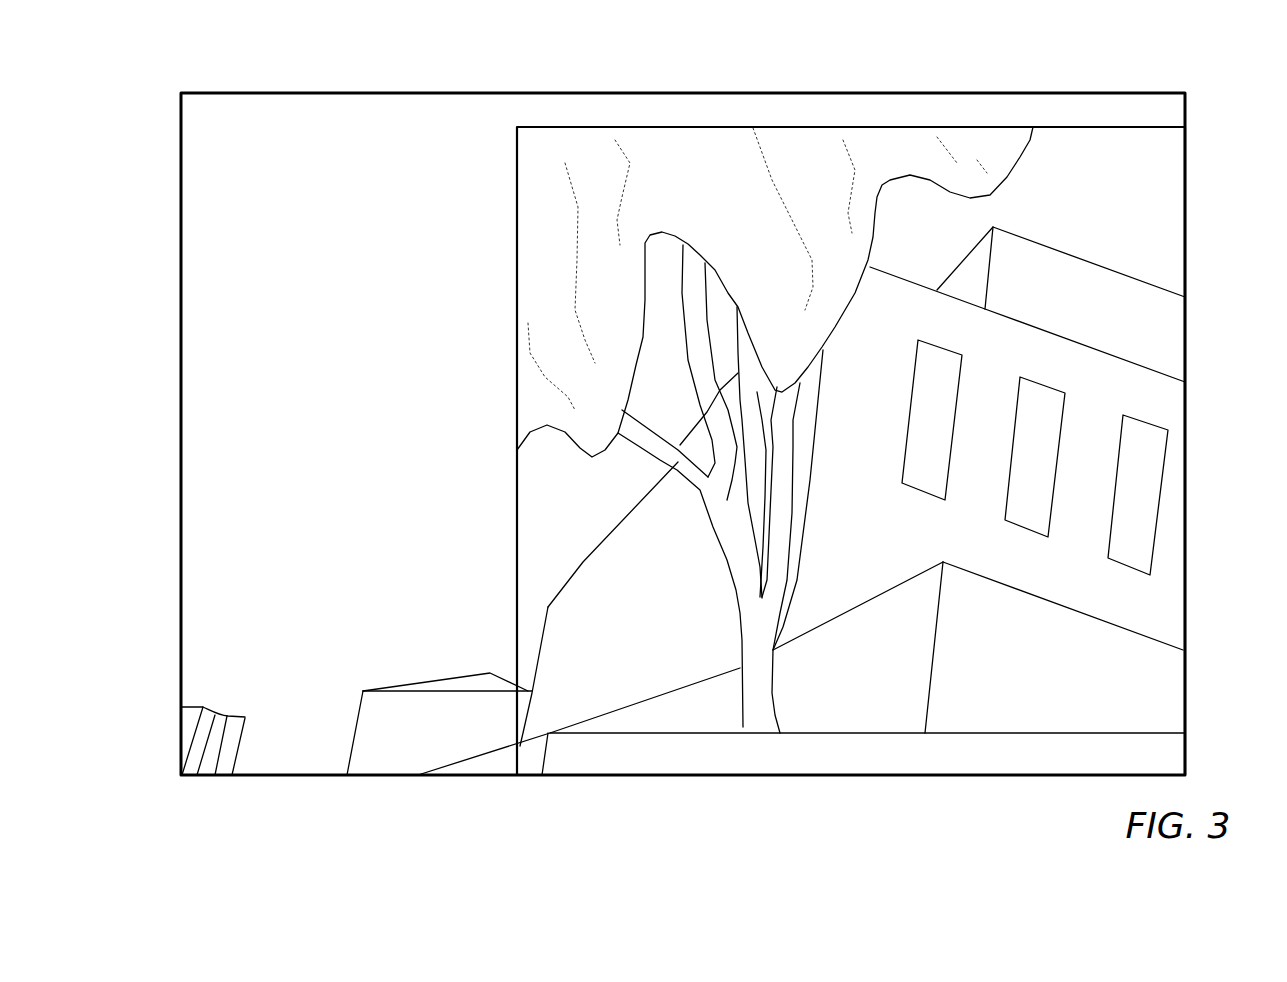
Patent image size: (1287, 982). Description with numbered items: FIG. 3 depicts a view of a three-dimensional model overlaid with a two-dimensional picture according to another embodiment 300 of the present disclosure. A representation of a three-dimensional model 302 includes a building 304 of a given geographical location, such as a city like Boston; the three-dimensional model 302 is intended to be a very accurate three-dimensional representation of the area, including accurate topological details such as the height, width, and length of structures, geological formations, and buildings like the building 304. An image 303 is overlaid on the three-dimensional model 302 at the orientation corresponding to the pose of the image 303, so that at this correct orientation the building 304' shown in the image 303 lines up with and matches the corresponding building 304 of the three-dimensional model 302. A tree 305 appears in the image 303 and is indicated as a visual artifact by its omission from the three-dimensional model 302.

The embodiment 300 is at (1032, 78).
The three-dimensional model 302 is at (453, 708).
The image 303 is at (1128, 200).
The building 304 is at (801, 647).
The building 304' is at (1027, 480).
The tree 305 is at (708, 153).